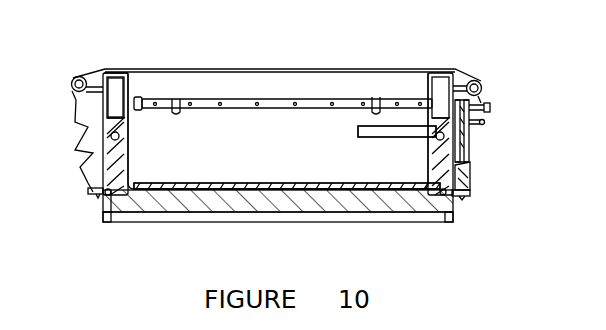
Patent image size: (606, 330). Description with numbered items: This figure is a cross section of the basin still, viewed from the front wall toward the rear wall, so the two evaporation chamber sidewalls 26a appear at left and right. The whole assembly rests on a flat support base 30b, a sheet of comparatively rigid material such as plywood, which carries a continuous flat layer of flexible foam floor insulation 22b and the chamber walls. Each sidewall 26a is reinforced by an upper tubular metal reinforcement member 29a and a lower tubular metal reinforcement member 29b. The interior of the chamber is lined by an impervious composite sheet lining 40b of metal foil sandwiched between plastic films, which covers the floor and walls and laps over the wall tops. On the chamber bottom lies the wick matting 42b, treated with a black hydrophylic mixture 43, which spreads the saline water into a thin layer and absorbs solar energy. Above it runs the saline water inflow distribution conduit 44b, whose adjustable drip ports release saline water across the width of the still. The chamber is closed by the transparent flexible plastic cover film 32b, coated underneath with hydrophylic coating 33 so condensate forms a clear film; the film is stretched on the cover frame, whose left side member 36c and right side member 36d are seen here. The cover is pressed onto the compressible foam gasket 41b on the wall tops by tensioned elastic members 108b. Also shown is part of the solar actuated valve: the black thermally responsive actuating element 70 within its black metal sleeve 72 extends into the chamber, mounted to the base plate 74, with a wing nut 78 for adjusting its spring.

The transparent flexible plastic cover film 32b is at (183, 69).
The hydrophylic coating 33 is at (158, 73).
The left side member of cover frame 36c is at (71, 78).
The right side member of cover frame 36d is at (470, 81).
The gasket of compressible plastic foam 41b is at (113, 72).
The saline water inflow distribution conduit 44b is at (313, 99).
The impervious composite sheet lining 40b is at (128, 134).
The thermally responsive actuating element 70 is at (358, 131).
The black metal sleeve 72 is at (397, 131).
The wick matting 42b is at (295, 182).
The black hydrophylic mixture 43 is at (287, 186).
The floor insulation 22b is at (303, 203).
The flat support base 30b is at (336, 222).
The elastic members 108b is at (104, 138).
The wing nut 78 is at (490, 106).
The upper tubular metal reinforcement member for sidewalls 29a is at (108, 140).
The base plate 74 is at (466, 180).
The evaporation chamber sidewalls 26a is at (470, 193).
The lower tubular metal reinforcement member for sidewalls 29b is at (108, 198).